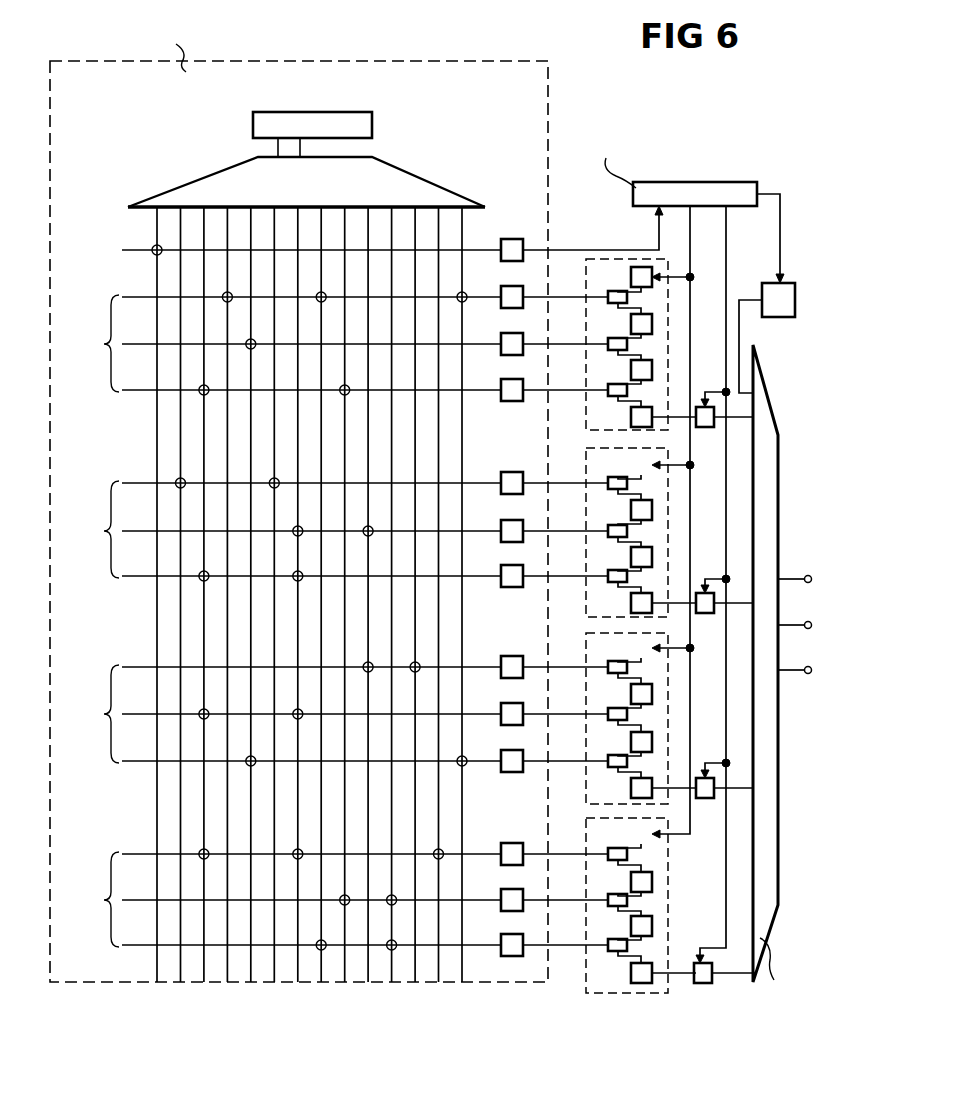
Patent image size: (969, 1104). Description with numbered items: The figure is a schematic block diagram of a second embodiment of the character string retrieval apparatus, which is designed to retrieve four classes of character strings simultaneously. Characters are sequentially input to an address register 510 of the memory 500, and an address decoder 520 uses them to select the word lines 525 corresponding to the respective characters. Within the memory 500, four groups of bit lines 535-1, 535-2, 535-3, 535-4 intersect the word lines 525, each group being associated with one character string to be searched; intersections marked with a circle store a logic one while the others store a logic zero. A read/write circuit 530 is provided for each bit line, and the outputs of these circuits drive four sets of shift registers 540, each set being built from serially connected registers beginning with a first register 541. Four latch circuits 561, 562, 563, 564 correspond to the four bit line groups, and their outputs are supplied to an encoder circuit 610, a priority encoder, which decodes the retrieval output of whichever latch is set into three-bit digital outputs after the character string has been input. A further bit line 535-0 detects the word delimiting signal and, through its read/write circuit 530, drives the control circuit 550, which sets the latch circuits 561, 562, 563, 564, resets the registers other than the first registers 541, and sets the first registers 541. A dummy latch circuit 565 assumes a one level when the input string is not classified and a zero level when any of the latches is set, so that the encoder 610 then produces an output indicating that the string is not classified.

The memory 500 is at (551, 115).
The address register 510 is at (330, 112).
The address decoder 520 is at (430, 181).
The word lines 525 is at (443, 626).
The read/write circuit 530 is at (510, 239).
The bit line 535-0 is at (122, 250).
The first group of bit lines 535-1 is at (105, 344).
The second group of bit lines 535-2 is at (105, 531).
The third group of bit lines 535-3 is at (105, 714).
The fourth group of bit lines 535-4 is at (105, 900).
The shift registers 540 is at (667, 258).
The first register 541 is at (631, 277).
The control circuit 550 is at (706, 182).
The latch circuit 561 is at (710, 428).
The latch circuit 562 is at (710, 614).
The latch circuit 563 is at (710, 799).
The latch circuit 564 is at (734, 1007).
The dummy latch circuit 565 is at (793, 290).
The encoder circuit 610 is at (766, 397).